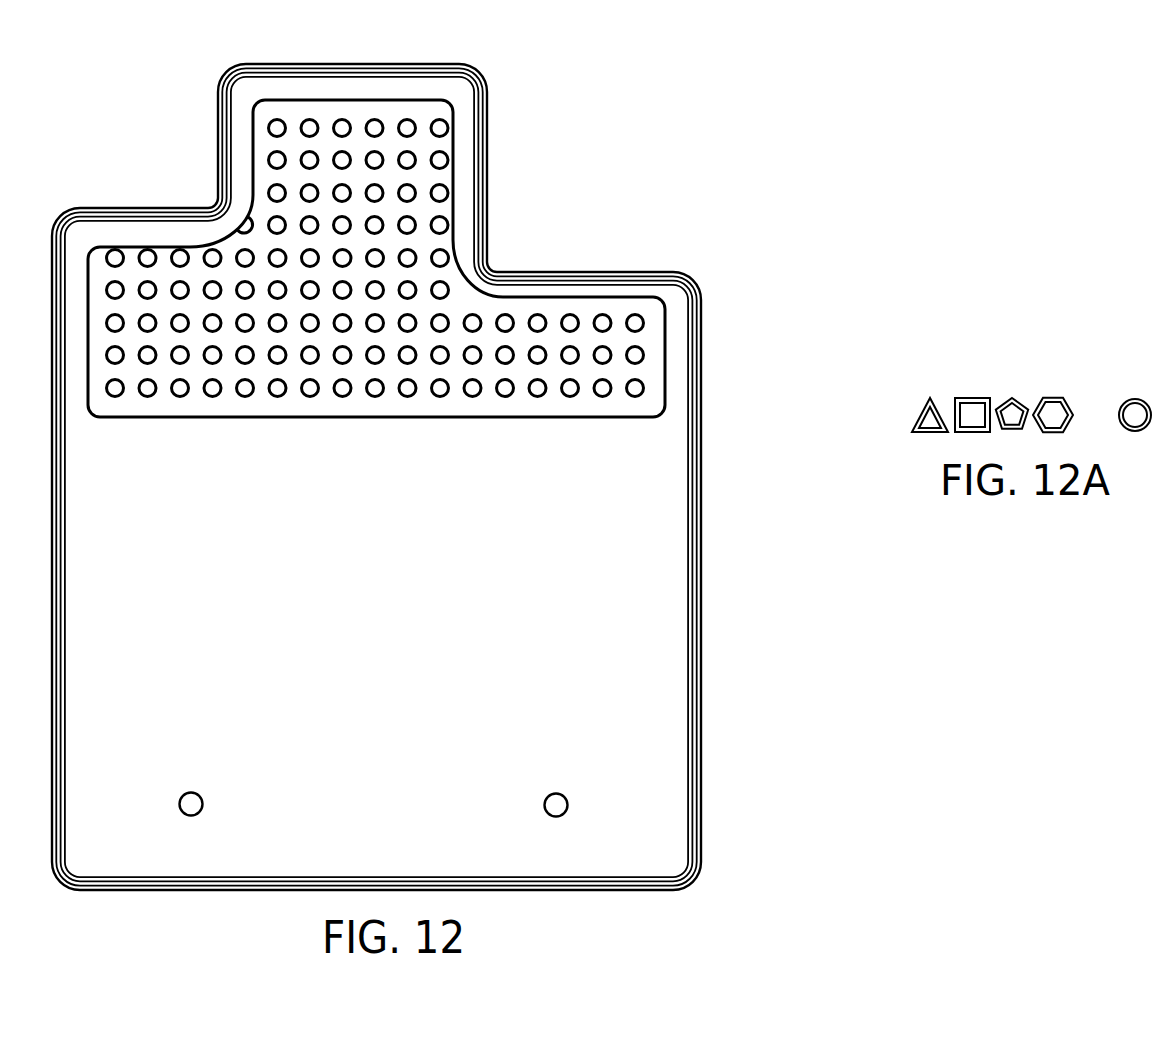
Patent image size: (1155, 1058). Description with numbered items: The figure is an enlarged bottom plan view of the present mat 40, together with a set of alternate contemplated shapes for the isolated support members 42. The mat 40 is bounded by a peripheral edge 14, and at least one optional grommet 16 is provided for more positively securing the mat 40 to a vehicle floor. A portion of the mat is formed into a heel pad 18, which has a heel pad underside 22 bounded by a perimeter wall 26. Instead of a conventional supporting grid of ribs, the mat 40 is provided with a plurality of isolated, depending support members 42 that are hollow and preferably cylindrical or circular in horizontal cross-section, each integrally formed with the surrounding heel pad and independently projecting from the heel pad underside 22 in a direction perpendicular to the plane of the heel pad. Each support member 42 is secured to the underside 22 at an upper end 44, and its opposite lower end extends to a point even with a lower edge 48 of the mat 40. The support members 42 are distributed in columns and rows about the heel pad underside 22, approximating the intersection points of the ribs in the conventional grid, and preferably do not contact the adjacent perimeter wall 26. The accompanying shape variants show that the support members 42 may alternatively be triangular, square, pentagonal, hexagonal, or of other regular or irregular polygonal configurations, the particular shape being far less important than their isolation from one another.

In FIG. 12, the peripheral edge 14 is at (167, 890).
In FIG. 12, the grommet 16 is at (557, 805).
In FIG. 12, the heel pad 18 is at (376, 279).
In FIG. 12, the heel pad underside 22 is at (207, 408).
In FIG. 12, the perimeter wall 26 is at (470, 285).
In FIG. 12, the mat 40 is at (627, 238).
In FIG. 12, the support members 42 is at (313, 396).
In FIG. 12A, the upper end 44 is at (1130, 398).
In FIG. 12, the lower edge 48 is at (645, 702).